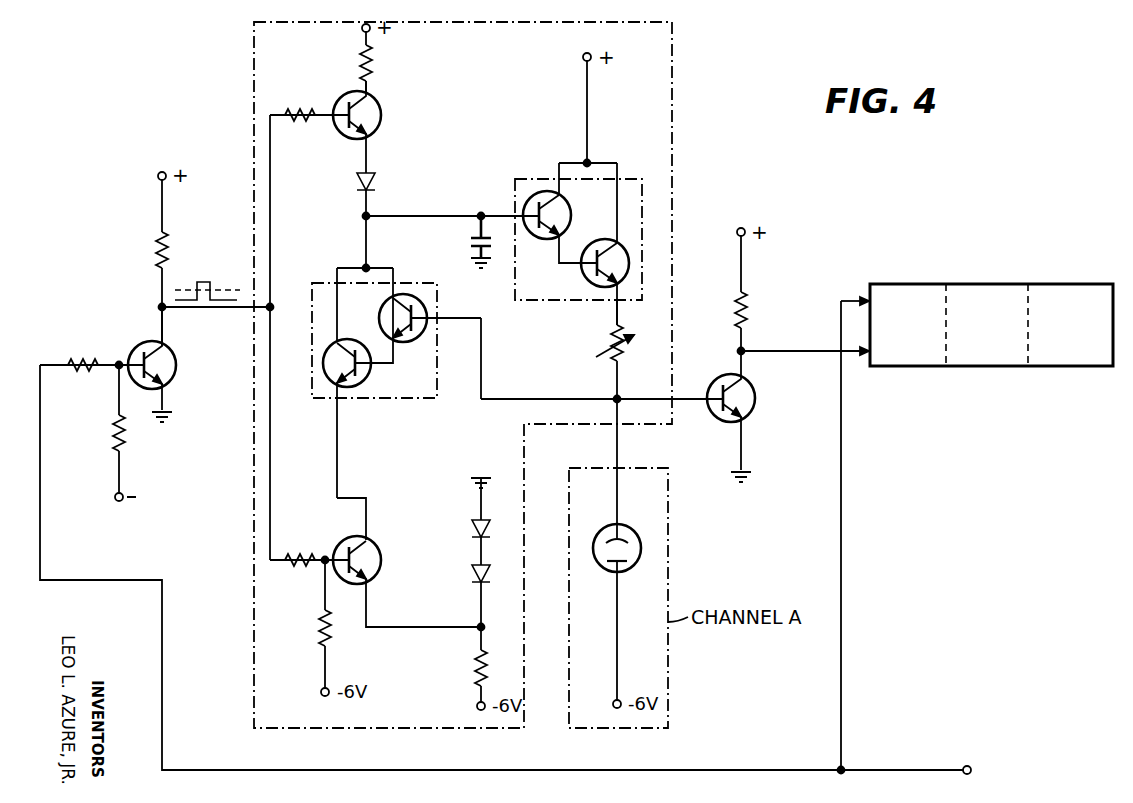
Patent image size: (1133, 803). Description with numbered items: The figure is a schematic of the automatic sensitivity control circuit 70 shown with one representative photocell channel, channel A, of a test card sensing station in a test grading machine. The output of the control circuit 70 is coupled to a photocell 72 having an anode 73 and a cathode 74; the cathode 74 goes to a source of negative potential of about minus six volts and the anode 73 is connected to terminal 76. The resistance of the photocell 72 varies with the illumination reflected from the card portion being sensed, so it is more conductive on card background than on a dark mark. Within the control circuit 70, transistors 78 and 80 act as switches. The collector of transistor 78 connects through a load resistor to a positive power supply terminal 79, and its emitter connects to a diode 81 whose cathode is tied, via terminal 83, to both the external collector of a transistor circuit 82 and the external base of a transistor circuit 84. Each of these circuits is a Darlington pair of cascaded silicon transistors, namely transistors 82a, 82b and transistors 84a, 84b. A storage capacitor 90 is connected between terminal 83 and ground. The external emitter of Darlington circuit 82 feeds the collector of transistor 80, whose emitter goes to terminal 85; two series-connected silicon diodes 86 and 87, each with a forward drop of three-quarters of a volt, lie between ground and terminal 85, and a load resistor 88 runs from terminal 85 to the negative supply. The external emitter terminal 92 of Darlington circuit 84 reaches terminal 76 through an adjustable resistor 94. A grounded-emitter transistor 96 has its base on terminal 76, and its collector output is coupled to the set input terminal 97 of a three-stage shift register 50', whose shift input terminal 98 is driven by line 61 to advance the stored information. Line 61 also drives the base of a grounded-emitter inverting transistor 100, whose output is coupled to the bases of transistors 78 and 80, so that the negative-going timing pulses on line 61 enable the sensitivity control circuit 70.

The sensitivity control circuit 70 is at (250, 60).
The positive power supply terminal 79 is at (361, 32).
The transistor 78 is at (378, 108).
The diode 81 is at (375, 184).
The terminal 83 is at (480, 212).
The transistor circuit 84 is at (576, 189).
The silicon transistor 84a is at (571, 208).
The silicon transistor 84b is at (585, 270).
The storage capacitor 90 is at (470, 243).
The transistor circuit 82 is at (382, 373).
The silicon transistor 82a is at (383, 310).
The silicon transistor 82b is at (369, 378).
The external emitter terminal 92 is at (612, 303).
The adjustable resistor 94 is at (625, 356).
The terminal 76 is at (615, 398).
The transistor 96 is at (722, 378).
The shift input terminal 98 is at (866, 298).
The set input terminal 97 is at (869, 360).
The three-stage shift register 50' is at (991, 331).
The transistor 100 is at (177, 366).
The transistor 80 is at (374, 543).
The silicon diode 87 is at (484, 528).
The silicon diode 86 is at (470, 573).
The terminal 85 is at (478, 625).
The load resistor 88 is at (473, 664).
The photocell 72 is at (620, 549).
The anode 73 is at (622, 540).
The cathode 74 is at (623, 563).
The line 61 is at (967, 765).